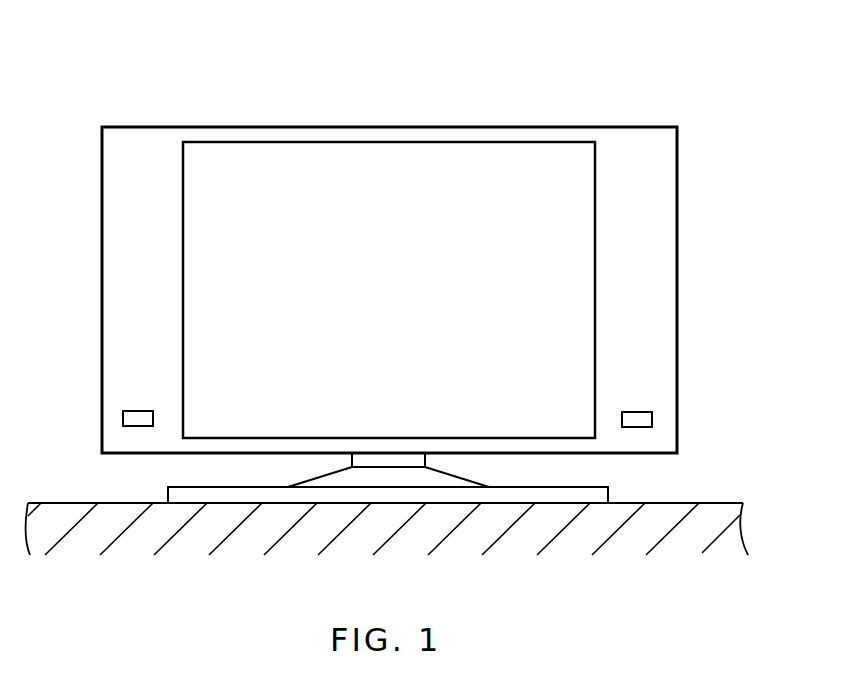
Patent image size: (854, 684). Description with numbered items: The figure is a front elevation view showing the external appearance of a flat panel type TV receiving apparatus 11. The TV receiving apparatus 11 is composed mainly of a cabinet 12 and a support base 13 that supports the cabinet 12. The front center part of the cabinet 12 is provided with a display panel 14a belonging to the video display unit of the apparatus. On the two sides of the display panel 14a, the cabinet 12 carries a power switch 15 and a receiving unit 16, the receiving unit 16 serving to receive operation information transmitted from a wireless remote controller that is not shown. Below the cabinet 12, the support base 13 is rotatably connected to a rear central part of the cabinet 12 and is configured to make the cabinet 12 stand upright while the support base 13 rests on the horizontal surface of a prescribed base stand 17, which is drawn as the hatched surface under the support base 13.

The TV receiving apparatus 11 is at (385, 95).
The cabinet 12 is at (640, 127).
The support base 13 is at (583, 487).
The display panel 14a is at (230, 162).
The power switch 15 is at (123, 418).
The receiving unit 16 is at (652, 418).
The base stand 17 is at (735, 496).